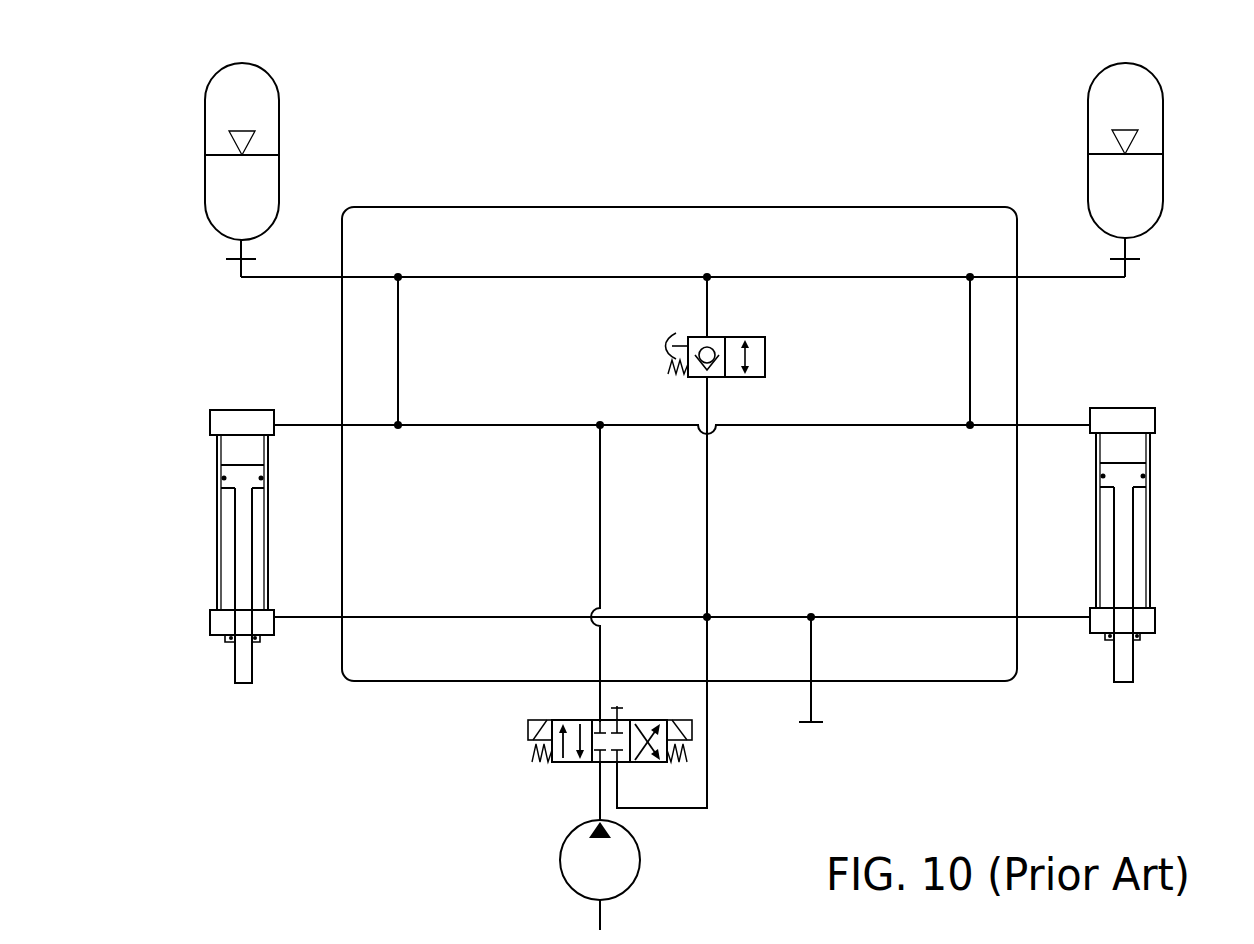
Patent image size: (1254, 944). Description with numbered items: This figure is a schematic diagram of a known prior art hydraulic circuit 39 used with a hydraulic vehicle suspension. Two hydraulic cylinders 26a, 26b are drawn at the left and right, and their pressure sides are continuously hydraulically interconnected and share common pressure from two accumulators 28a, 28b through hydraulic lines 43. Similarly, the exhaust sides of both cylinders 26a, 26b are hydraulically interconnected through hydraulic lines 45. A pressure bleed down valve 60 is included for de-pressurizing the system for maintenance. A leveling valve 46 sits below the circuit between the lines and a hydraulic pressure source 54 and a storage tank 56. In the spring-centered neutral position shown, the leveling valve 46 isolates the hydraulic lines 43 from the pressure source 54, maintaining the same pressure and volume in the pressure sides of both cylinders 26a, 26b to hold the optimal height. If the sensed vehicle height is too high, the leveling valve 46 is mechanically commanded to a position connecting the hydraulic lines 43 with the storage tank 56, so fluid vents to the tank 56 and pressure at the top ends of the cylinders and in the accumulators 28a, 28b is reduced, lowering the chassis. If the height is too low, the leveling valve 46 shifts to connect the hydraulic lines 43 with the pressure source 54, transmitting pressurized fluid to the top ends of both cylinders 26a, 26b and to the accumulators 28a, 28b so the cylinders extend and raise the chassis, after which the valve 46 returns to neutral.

The hydraulic circuit 39 is at (902, 117).
The accumulator 28a is at (279, 117).
The accumulator 28b is at (1163, 117).
The hydraulic lines 43 is at (532, 276).
The hydraulic lines 45 is at (430, 616).
The pressure bleed down valve 60 is at (760, 337).
The leveling valve 46 is at (547, 720).
The hydraulic pressure source 54 is at (560, 861).
The storage tank 56 is at (848, 741).
The hydraulic cylinder 26a is at (215, 450).
The hydraulic cylinder 26b is at (1155, 455).